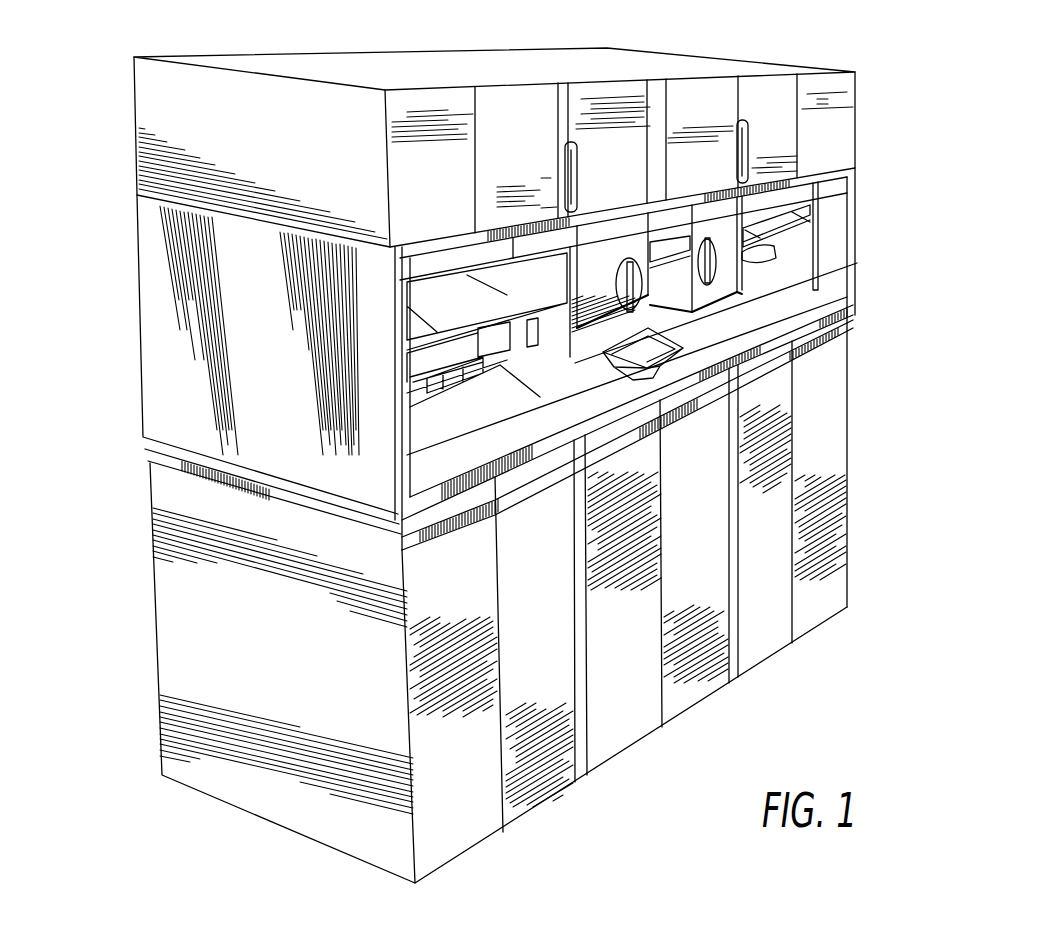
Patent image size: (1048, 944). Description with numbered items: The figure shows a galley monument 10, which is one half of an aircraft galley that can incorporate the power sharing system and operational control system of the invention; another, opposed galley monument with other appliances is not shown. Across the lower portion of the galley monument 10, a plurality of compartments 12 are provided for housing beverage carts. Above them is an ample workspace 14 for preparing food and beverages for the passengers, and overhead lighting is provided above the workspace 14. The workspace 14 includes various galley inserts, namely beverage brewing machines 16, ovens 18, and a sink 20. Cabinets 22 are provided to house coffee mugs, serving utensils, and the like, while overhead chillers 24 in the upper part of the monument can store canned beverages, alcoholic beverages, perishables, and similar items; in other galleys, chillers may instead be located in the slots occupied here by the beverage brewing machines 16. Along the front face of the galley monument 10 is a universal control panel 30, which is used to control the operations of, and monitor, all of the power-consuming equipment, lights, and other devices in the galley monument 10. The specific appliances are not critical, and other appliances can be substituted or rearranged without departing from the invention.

The galley monument 10 is at (958, 222).
The compartments 12 is at (467, 818).
The workspace 14 is at (790, 313).
The beverage brewing machines 16 is at (437, 423).
The ovens 18 is at (590, 338).
The sink 20 is at (655, 342).
The cabinets 22 is at (415, 320).
The overhead chillers 24 is at (595, 96).
The universal control panel 30 is at (838, 186).